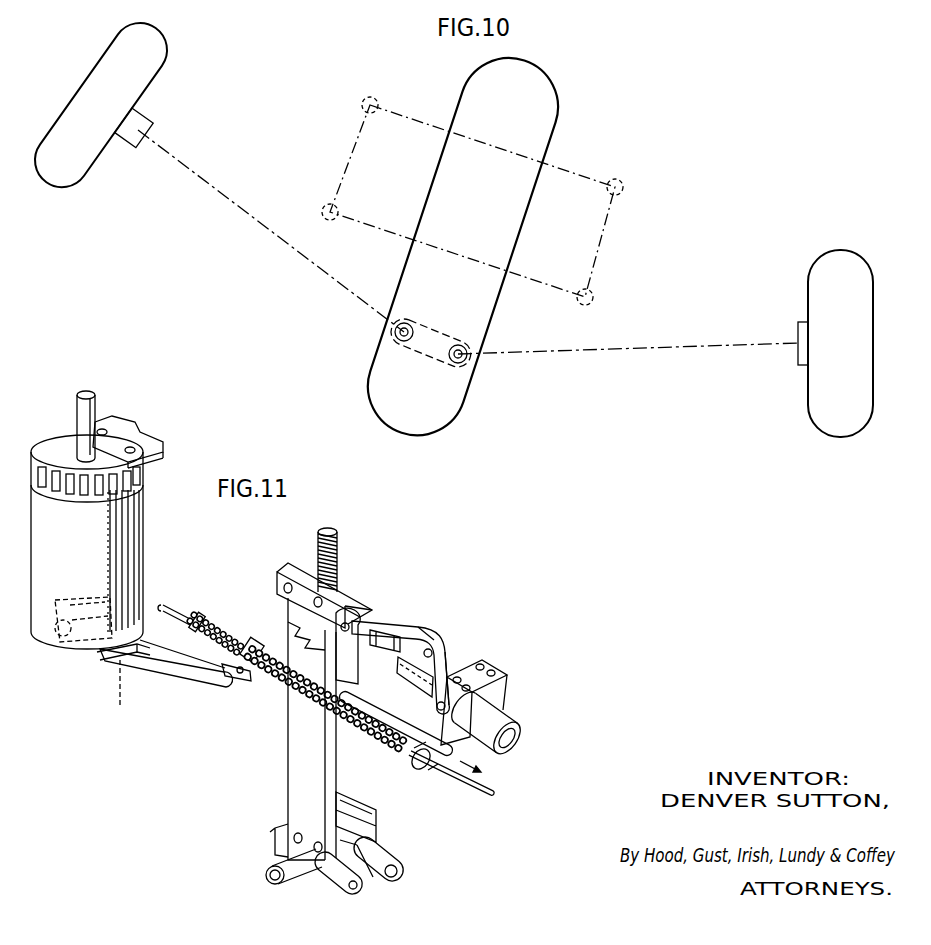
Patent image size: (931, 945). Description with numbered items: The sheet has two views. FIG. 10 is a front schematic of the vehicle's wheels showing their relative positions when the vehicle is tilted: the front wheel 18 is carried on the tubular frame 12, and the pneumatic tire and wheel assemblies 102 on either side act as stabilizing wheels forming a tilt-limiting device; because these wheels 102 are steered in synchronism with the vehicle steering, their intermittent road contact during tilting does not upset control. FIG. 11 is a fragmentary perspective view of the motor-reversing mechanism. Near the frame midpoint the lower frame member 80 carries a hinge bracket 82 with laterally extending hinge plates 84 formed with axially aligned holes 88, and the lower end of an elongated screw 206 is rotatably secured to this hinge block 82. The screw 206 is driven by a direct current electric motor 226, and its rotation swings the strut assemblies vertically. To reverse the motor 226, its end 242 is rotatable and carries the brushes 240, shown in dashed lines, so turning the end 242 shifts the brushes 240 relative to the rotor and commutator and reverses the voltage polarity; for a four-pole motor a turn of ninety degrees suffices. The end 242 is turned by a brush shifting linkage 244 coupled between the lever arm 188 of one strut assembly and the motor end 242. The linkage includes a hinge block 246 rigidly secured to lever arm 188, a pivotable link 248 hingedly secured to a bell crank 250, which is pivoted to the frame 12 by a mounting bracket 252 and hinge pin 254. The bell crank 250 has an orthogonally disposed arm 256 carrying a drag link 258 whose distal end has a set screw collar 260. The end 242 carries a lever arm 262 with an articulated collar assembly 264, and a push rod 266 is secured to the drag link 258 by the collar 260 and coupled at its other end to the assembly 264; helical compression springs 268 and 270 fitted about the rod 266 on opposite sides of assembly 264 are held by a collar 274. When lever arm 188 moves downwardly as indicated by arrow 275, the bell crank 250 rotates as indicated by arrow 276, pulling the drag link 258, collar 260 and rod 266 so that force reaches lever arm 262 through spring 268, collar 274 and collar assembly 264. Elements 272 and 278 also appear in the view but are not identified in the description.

In FIG. 10, the tubular frame 12 is at (623, 187).
In FIG. 10, the front wheel 18 is at (545, 95).
In FIG. 10, the hinge bracket 82 is at (452, 362).
In FIG. 11, the hinge bracket 82 is at (368, 860).
In FIG. 11, the hinge plate 84 is at (403, 873).
In FIG. 11, the holes 88 is at (350, 887).
In FIG. 11, the lower frame member 80 is at (268, 866).
In FIG. 10, the pneumatic tire and wheel assembly 102 is at (163, 53).
In FIG. 11, the lever arm 188 is at (493, 720).
In FIG. 11, the elongated screw 206 is at (342, 545).
In FIG. 11, the direct current electric motor 226 is at (133, 535).
In FIG. 11, the brushes 240 is at (116, 690).
In FIG. 11, the end of motor 242 is at (82, 648).
In FIG. 11, the brush shifting linkage 244 is at (398, 615).
In FIG. 11, the hinge block 246 is at (503, 672).
In FIG. 11, the pivotable link 248 is at (443, 660).
In FIG. 11, the bell crank 250 is at (415, 637).
In FIG. 11, the mounting bracket 252 is at (343, 600).
In FIG. 11, the hinge pin 254 is at (360, 611).
In FIG. 11, the orthogonally disposed arm 256 is at (388, 665).
In FIG. 11, the drag link 258 is at (370, 728).
In FIG. 11, the collar 260 is at (415, 757).
In FIG. 11, the lever arm 262 is at (197, 658).
In FIG. 11, the articulated collar assembly 264 is at (243, 673).
In FIG. 11, the push rod 266 is at (485, 783).
In FIG. 11, the helical compression spring 268 is at (317, 702).
In FIG. 11, the helical compression spring 270 is at (222, 632).
In FIG. 11, the pin 272 is at (407, 752).
In FIG. 11, the collar 274 is at (197, 615).
In FIG. 11, the arrow 275 is at (508, 660).
In FIG. 11, the arrow 276 is at (398, 660).
In FIG. 11, the strap 278 is at (142, 657).